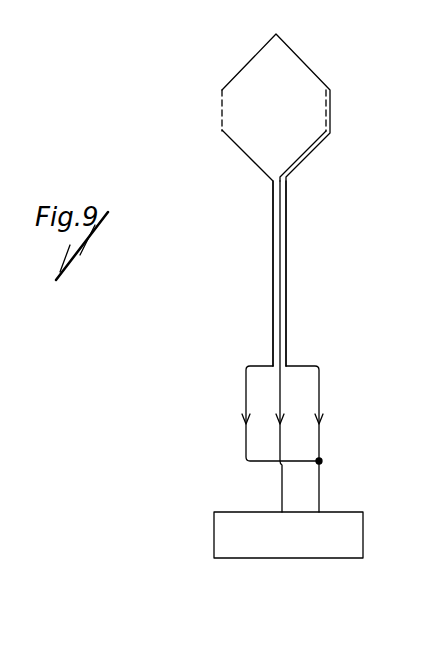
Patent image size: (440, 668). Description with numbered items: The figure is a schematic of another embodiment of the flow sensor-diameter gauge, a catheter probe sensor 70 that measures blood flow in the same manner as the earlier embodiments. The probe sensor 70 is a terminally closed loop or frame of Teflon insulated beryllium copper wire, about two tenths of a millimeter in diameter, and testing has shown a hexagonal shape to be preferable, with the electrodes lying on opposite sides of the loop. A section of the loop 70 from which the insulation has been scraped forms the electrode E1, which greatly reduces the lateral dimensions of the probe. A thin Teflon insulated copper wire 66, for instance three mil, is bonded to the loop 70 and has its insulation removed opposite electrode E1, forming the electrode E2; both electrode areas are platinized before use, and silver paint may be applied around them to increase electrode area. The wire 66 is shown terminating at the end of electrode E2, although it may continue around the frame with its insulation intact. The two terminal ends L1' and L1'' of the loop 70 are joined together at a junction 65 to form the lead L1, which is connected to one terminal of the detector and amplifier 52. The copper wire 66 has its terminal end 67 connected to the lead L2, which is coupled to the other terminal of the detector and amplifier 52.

The catheter probe sensor 70 is at (313, 57).
The first electrode E1 is at (222, 106).
The second electrode E2 is at (326, 111).
The thin Teflon insulated copper wire 66 is at (304, 159).
The lead L1 is at (284, 336).
The terminal end of the loop L1' is at (250, 273).
The terminal end of the loop L1'' is at (312, 273).
The lead L2 is at (282, 286).
The terminal end of the copper wire 67 is at (288, 408).
The junction 65 is at (322, 460).
The detector and amplifier 52 is at (340, 512).